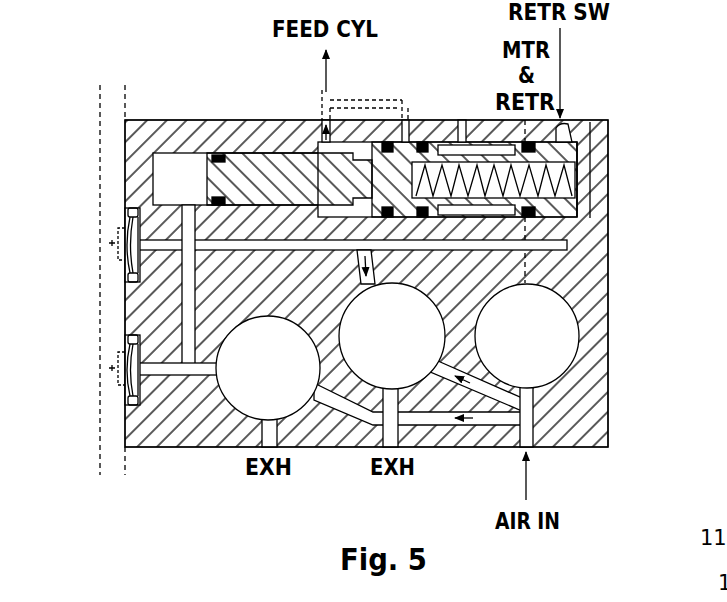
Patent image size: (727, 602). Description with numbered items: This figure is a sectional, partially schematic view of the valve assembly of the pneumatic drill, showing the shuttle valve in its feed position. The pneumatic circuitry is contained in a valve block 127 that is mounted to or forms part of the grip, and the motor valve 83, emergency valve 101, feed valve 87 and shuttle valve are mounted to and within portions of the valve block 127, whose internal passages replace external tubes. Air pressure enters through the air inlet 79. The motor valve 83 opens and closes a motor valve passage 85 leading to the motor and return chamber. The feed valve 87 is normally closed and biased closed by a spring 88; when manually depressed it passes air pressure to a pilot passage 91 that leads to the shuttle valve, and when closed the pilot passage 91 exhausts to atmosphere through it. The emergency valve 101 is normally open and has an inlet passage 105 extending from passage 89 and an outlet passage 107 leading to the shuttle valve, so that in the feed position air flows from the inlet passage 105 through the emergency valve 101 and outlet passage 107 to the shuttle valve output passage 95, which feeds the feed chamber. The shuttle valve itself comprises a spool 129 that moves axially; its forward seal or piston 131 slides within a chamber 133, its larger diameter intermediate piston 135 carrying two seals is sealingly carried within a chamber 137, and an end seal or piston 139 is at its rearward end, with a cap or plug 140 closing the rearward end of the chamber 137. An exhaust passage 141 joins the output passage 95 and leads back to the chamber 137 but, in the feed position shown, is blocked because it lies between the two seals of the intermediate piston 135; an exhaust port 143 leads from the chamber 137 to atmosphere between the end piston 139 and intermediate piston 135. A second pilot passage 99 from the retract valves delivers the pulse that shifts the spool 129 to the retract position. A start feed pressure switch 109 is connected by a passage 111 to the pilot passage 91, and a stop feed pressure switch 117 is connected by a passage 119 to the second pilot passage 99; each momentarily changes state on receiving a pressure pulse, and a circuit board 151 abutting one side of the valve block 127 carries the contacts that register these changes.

The spool 129 is at (238, 140).
The forward seal or piston 131 is at (303, 167).
The chamber 133 is at (163, 162).
The passage 119 is at (158, 243).
The stop feed pressure switch 117 is at (125, 215).
The pilot passage 91 is at (187, 294).
The outlet passage 107 is at (362, 258).
The start feed pressure switch 109 is at (125, 396).
The circuit board 151 is at (108, 440).
The passage 111 is at (162, 378).
The feed valve 87 is at (225, 412).
The passage 89 is at (362, 388).
The emergency valve 101 is at (434, 400).
The inlet passage 105 is at (490, 420).
The air inlet 79 is at (537, 432).
The motor valve 83 is at (570, 370).
The motor valve passage 85 is at (558, 284).
The valve block 127 is at (597, 288).
The chamber 137 is at (463, 208).
The cap or plug 140 is at (598, 195).
The spring 88 is at (568, 180).
The end seal or piston 139 is at (596, 127).
The second pilot passage 99 is at (563, 124).
The exhaust port 143 is at (466, 120).
The intermediate piston 135 is at (403, 100).
The exhaust passage 141 is at (360, 100).
The output passage 95 is at (322, 92).